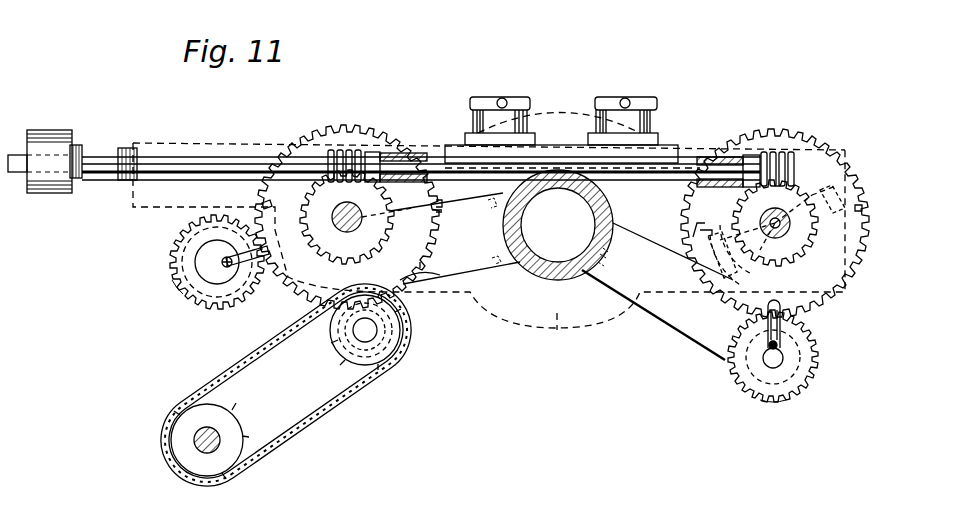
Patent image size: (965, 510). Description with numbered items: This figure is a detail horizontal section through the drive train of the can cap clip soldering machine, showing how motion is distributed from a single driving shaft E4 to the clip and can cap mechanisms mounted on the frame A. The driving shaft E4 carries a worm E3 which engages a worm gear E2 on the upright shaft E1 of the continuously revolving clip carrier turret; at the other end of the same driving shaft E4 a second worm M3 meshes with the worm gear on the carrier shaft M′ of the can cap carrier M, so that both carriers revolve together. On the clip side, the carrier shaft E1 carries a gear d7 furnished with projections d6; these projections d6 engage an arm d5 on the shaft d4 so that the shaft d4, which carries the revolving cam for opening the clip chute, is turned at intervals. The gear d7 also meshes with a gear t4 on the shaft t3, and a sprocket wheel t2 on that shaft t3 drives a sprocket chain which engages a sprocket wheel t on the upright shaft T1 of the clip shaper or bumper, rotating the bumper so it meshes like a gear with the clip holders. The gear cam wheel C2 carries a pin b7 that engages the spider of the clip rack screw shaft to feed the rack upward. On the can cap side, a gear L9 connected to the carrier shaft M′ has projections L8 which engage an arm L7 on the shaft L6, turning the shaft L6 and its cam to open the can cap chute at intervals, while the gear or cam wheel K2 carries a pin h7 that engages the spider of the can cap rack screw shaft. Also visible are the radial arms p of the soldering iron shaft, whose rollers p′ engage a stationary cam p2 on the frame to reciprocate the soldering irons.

The driving shaft E4 is at (230, 160).
The worm E3 is at (350, 152).
The worm gear E2 is at (347, 217).
The upright shaft E1 is at (338, 230).
The projections d6 is at (268, 205).
The gear d7 is at (409, 263).
The gear cam wheel C2 is at (195, 297).
The pin b7 is at (177, 290).
The shaft d4 is at (228, 277).
The arm d5 is at (250, 243).
The sprocket wheel t is at (237, 417).
The upright shaft T1 is at (193, 443).
The gear t4 is at (407, 345).
The sprocket wheel t2 is at (340, 357).
The shaft t3 is at (365, 342).
The frame A is at (558, 270).
The worm M3 is at (771, 160).
The can cap carrier M is at (778, 233).
The carrier shaft M′ is at (781, 223).
The radial arms p is at (805, 200).
The rollers p′ is at (837, 187).
The stationary cam p2 is at (735, 266).
The projections L8 is at (860, 208).
The gear L9 is at (809, 255).
The gear or cam wheel K2 is at (818, 370).
The arm L7 is at (780, 327).
The shaft L6 is at (770, 348).
The pin h7 is at (785, 395).